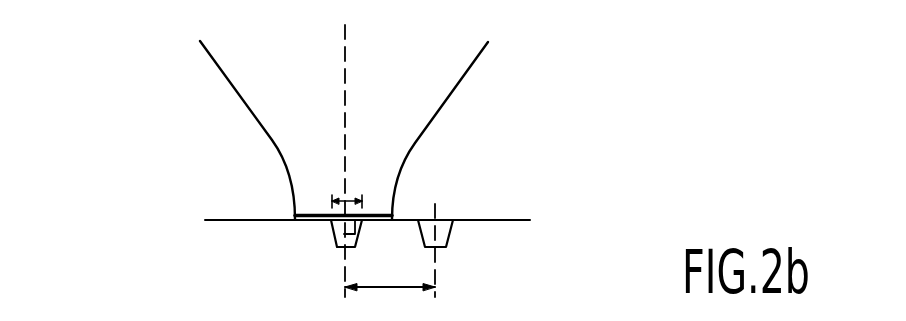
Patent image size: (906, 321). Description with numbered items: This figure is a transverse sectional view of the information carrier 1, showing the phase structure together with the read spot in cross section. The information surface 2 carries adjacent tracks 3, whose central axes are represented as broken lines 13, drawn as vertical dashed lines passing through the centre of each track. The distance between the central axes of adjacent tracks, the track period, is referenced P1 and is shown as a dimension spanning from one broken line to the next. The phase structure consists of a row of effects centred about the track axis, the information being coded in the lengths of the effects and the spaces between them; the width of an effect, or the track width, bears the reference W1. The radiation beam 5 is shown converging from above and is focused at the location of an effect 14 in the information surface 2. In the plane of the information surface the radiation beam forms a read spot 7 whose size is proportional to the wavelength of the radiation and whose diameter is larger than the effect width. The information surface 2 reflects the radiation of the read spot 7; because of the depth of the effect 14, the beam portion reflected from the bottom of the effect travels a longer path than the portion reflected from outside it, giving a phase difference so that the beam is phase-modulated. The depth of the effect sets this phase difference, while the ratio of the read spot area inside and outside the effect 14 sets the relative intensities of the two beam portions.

The information carrier 1 is at (615, 232).
The information surface 2 is at (497, 218).
The tracks 3 is at (443, 216).
The radiation beam 5 is at (455, 88).
The read spot 7 is at (383, 217).
The broken lines 13 is at (370, 213).
The effect 14 is at (340, 249).
The track width W1 is at (334, 188).
The track period P1 is at (390, 303).